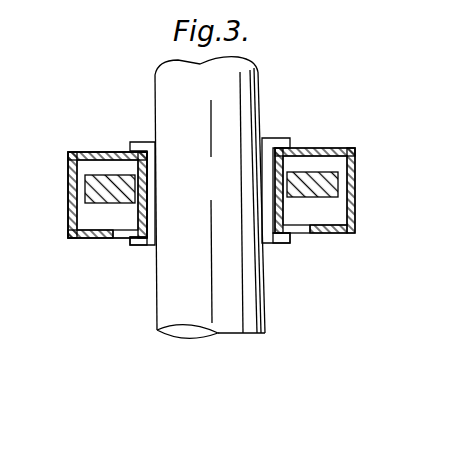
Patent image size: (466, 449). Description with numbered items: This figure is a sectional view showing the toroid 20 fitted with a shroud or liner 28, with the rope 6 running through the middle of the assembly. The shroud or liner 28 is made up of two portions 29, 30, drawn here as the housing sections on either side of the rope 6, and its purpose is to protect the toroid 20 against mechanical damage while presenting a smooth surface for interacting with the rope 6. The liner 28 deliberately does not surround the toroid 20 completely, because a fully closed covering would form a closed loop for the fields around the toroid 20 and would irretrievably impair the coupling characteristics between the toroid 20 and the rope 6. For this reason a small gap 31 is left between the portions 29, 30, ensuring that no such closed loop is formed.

The rope 6 is at (195, 190).
The toroid 20 is at (107, 176).
The shroud or liner 28 is at (61, 185).
The portion 29 is at (67, 225).
The portion 30 is at (143, 142).
The gap 31 is at (117, 247).